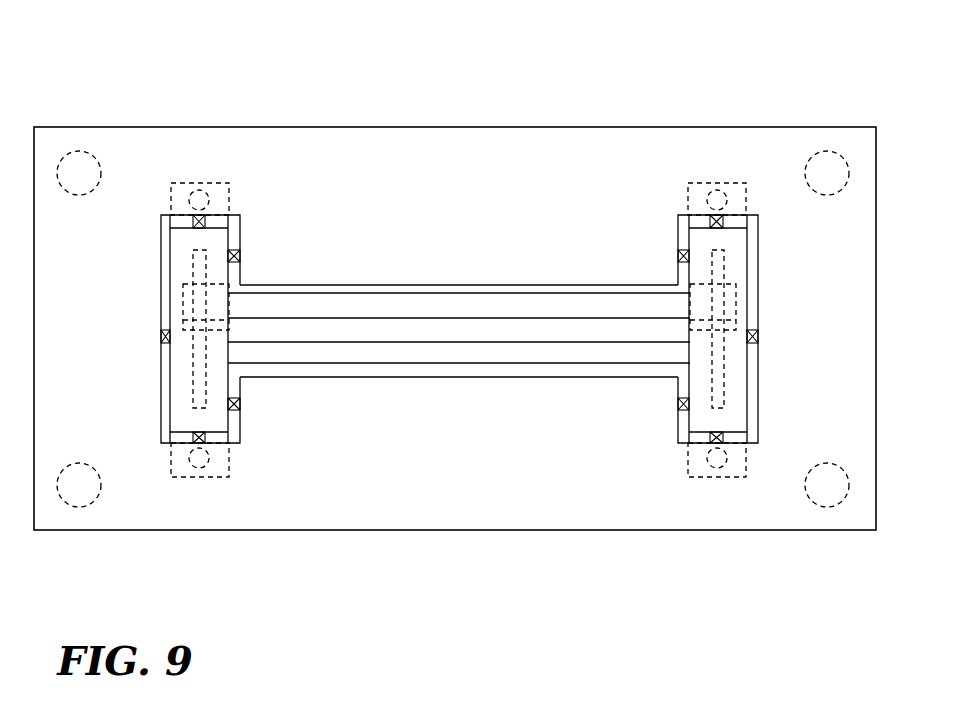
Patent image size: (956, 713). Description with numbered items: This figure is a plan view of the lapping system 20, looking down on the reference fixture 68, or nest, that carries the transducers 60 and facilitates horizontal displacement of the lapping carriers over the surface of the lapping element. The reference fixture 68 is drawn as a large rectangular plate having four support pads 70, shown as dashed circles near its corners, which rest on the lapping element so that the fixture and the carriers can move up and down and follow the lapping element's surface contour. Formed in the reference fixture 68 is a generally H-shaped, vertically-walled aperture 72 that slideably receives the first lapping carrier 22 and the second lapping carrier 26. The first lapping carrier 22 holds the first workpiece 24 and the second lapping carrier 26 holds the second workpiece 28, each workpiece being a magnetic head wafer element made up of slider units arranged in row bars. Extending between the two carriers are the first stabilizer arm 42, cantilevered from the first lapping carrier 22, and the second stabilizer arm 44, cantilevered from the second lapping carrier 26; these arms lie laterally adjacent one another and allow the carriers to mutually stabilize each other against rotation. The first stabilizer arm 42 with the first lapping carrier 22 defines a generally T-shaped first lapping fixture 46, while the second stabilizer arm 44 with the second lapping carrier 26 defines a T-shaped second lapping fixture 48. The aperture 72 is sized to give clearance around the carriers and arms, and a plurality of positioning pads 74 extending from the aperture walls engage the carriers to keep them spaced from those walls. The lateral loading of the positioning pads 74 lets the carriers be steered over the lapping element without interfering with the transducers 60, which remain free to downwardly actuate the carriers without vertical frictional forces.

The lapping system 20 is at (228, 52).
The first lapping carrier 22 is at (176, 258).
The first workpiece 24 is at (203, 387).
The second lapping carrier 26 is at (748, 243).
The second workpiece 28 is at (718, 393).
The first stabilizer arm 42 is at (455, 363).
The second stabilizer arm 44 is at (445, 296).
The first lapping fixture 46 is at (312, 205).
The second lapping fixture 48 is at (594, 442).
The transducers 60 is at (203, 205).
The reference fixture 68 is at (610, 127).
The support pads 70 is at (76, 173).
The aperture 72 is at (520, 285).
The positioning pads 74 is at (176, 218).